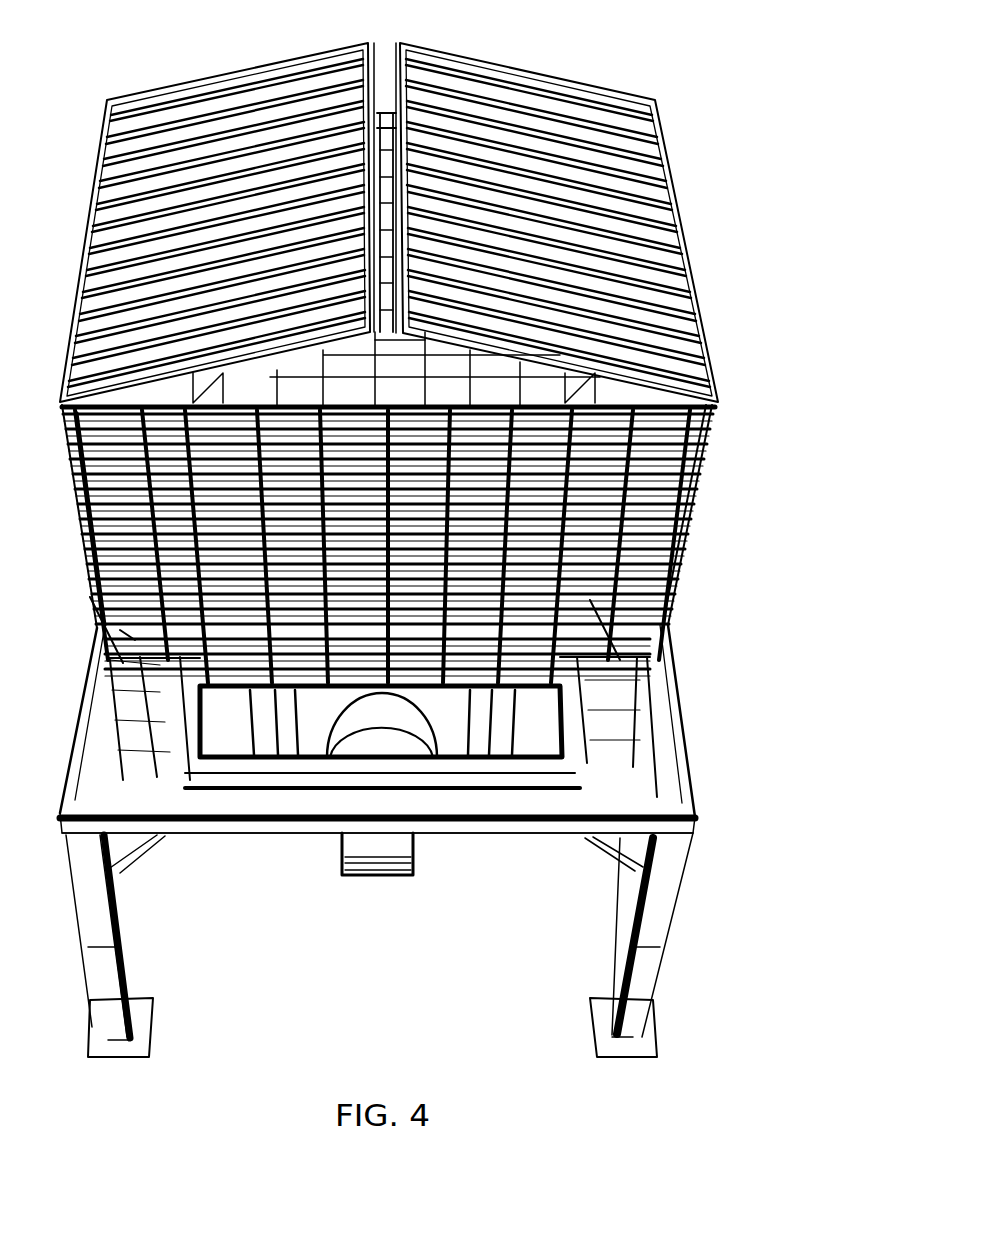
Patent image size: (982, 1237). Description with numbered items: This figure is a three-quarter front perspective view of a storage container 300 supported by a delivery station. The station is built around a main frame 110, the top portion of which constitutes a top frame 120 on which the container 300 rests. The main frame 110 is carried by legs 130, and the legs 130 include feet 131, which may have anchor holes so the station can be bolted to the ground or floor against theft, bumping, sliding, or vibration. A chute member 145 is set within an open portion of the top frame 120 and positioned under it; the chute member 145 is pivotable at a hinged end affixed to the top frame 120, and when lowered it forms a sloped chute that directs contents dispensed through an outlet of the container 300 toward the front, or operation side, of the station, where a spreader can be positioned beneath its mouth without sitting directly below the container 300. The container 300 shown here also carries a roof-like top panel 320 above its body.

The container 300 is at (664, 92).
The roof panel 320 is at (540, 76).
The top frame 120 is at (657, 760).
The main frame 110 is at (190, 837).
The legs 130 is at (648, 990).
The feet 131 is at (597, 1042).
The chute member 145 is at (415, 855).